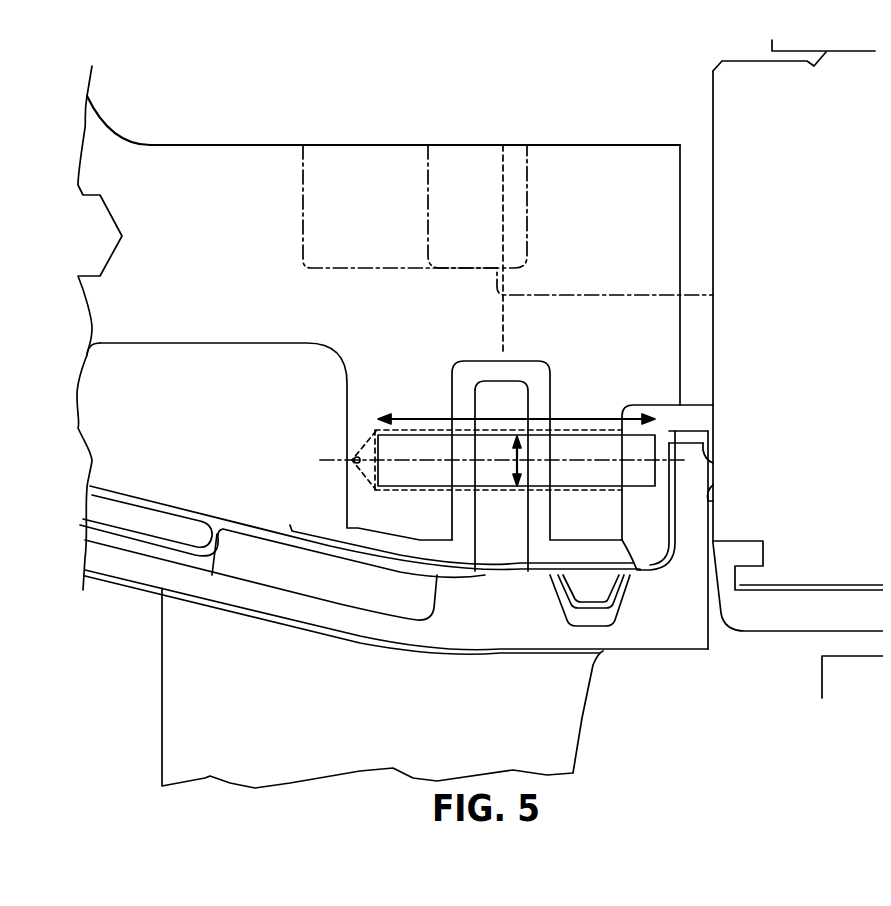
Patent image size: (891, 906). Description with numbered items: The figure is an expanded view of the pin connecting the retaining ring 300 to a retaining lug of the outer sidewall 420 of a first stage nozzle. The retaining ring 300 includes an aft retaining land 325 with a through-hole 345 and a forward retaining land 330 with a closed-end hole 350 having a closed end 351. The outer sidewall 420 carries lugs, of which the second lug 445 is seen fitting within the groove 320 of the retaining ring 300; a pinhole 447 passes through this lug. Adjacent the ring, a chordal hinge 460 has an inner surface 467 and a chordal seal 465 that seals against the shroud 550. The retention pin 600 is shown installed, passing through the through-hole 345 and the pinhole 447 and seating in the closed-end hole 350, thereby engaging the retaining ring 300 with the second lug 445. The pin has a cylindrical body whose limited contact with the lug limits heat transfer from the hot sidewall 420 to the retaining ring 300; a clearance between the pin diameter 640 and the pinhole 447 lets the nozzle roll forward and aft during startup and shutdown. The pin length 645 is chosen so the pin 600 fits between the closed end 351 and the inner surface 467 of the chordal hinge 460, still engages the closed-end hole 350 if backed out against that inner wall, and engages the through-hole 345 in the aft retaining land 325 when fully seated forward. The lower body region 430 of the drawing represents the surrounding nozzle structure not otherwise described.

The retaining ring 300 is at (552, 147).
The groove 320 is at (503, 373).
The aft retaining land 325 is at (637, 573).
The forward retaining land 330 is at (358, 532).
The through-hole 345 is at (572, 432).
The closed-end hole 350 is at (415, 435).
The closed end 351 is at (360, 437).
The outer sidewall 420 is at (482, 633).
The base member 430 is at (582, 722).
The second lug 445 is at (533, 365).
The pinhole 447 is at (507, 432).
The chordal hinge 460 is at (700, 435).
The chordal seal 465 is at (715, 481).
The inner surface 467 is at (670, 473).
The shroud 550 is at (833, 596).
The retention pin 600 is at (413, 505).
The pin diameter 640 is at (517, 462).
The pin length 645 is at (563, 422).